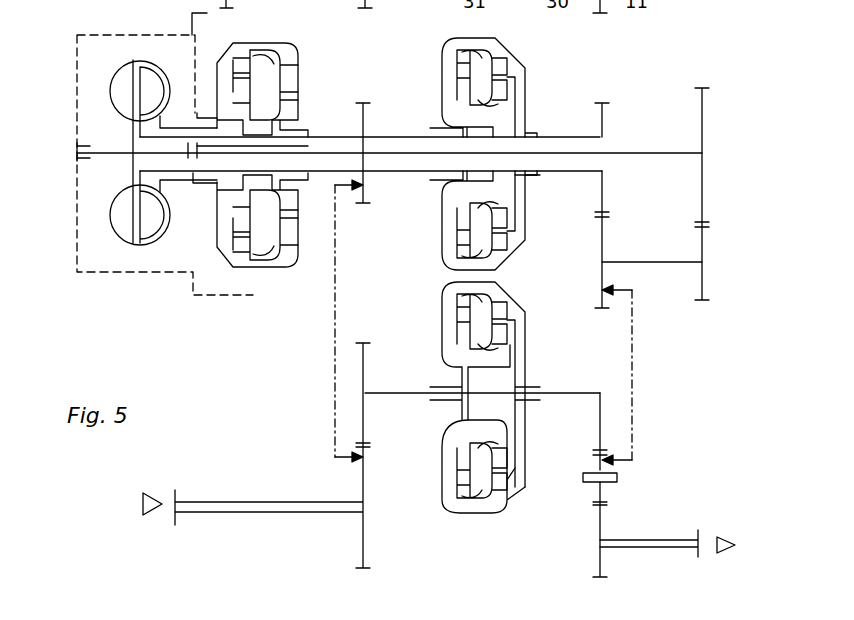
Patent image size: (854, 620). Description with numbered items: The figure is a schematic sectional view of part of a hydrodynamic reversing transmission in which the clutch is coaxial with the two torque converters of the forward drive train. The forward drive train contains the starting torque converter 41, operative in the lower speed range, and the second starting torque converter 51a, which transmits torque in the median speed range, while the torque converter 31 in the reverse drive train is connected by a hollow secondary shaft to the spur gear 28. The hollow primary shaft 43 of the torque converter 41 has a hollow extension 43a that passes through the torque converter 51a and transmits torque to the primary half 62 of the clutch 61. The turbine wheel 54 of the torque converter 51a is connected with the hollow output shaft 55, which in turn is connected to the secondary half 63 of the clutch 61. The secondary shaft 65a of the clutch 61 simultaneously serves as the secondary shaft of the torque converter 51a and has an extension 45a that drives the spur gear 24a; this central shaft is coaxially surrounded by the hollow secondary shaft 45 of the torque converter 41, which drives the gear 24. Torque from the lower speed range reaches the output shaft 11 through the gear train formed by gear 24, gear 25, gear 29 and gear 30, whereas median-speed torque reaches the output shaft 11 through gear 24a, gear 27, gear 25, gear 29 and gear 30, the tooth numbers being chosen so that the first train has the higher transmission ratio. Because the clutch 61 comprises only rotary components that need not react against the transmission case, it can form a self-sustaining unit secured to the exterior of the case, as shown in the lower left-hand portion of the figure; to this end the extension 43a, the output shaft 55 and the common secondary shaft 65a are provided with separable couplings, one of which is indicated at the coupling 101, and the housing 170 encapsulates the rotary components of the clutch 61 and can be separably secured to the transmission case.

The output shaft 11 is at (650, 547).
The gear 24 is at (602, 122).
The spur gear 24a is at (703, 122).
The gear 25 is at (602, 233).
The gear 27 is at (702, 247).
The spur gear 28 is at (602, 412).
The gear 29 is at (600, 488).
The gear 30 is at (602, 527).
The torque converter 31 is at (485, 520).
The torque converter 41 is at (533, 102).
The primary shaft 43 is at (403, 134).
The hollow extension 43a is at (177, 128).
The secondary shaft 45 is at (564, 175).
The secondary shaft 45a is at (650, 153).
The second starting torque converter 51a is at (308, 103).
The turbine wheel 54 is at (240, 63).
The hollow output shaft 55 is at (193, 183).
The clutch 61 is at (142, 252).
The primary half 62 is at (150, 80).
The secondary half 63 is at (123, 80).
The secondary shaft 65a is at (178, 152).
The coupling 101 is at (308, 146).
The housing 170 is at (100, 272).